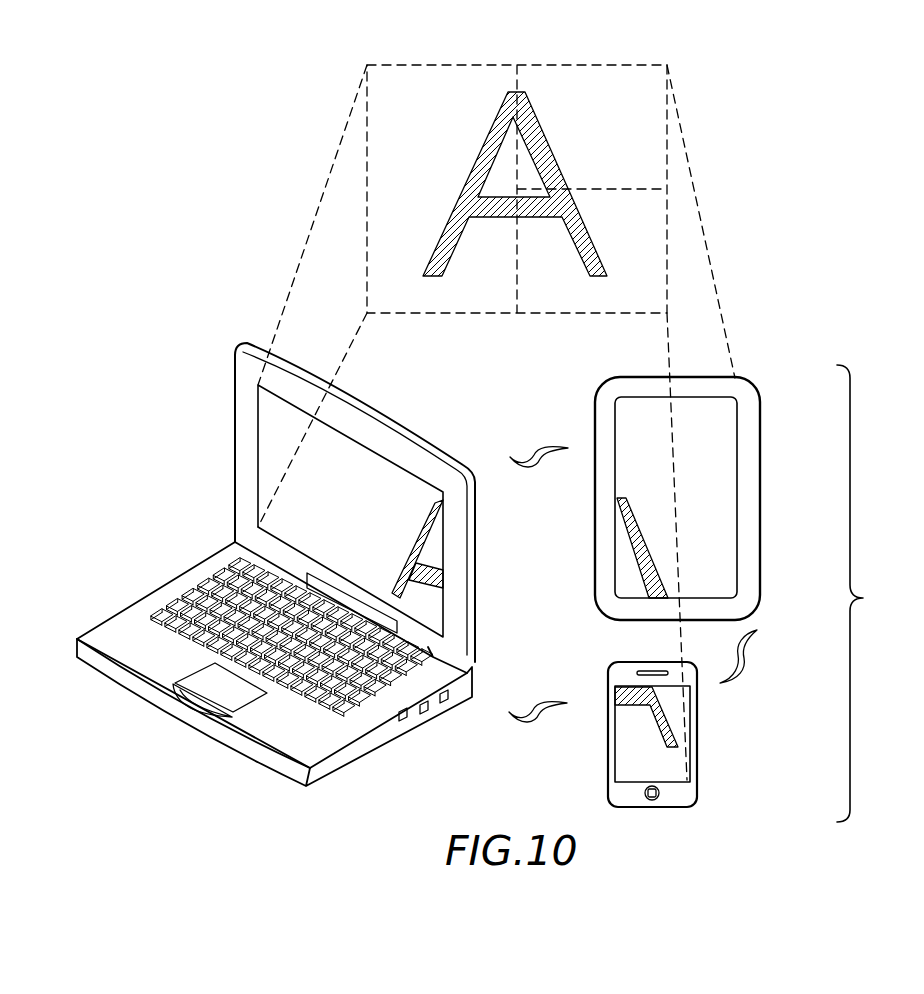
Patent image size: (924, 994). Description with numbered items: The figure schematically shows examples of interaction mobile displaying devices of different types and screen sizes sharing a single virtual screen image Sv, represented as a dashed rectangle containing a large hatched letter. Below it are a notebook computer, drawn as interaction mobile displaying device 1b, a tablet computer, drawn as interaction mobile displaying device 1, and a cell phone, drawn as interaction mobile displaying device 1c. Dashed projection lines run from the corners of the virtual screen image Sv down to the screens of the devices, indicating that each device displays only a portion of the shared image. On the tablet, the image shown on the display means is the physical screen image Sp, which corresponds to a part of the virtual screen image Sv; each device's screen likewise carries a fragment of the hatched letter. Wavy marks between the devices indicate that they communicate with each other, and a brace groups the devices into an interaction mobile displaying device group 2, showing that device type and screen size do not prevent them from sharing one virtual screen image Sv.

The virtual screen image Sv is at (352, 69).
The interaction mobile displaying device 1b is at (217, 353).
The interaction mobile displaying device 1 is at (714, 451).
The physical screen image Sp is at (712, 485).
The interaction mobile displaying device 1c is at (713, 725).
The interaction mobile displaying device group 2 is at (861, 593).